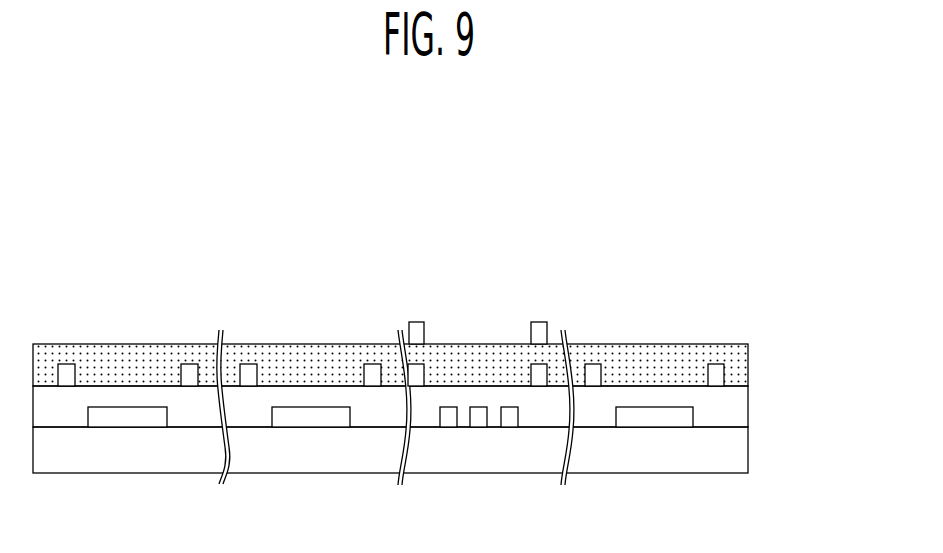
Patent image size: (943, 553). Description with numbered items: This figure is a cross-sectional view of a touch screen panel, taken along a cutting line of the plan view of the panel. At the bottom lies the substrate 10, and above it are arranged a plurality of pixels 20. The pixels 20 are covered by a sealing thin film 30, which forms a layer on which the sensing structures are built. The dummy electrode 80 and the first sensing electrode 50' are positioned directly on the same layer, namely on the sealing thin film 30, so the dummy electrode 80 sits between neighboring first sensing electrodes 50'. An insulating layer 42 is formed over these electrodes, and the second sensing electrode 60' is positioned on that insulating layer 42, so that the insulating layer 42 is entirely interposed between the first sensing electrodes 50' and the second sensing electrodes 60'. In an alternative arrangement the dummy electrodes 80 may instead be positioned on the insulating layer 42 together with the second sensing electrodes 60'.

The substrate 10 is at (745, 449).
The sealing thin film 30 is at (745, 406).
The insulating layer 42 is at (745, 369).
The pixels 20 is at (128, 407).
The dummy electrode 80 is at (65, 364).
The first sensing electrode 50' is at (393, 334).
The second sensing electrode 60' is at (491, 296).